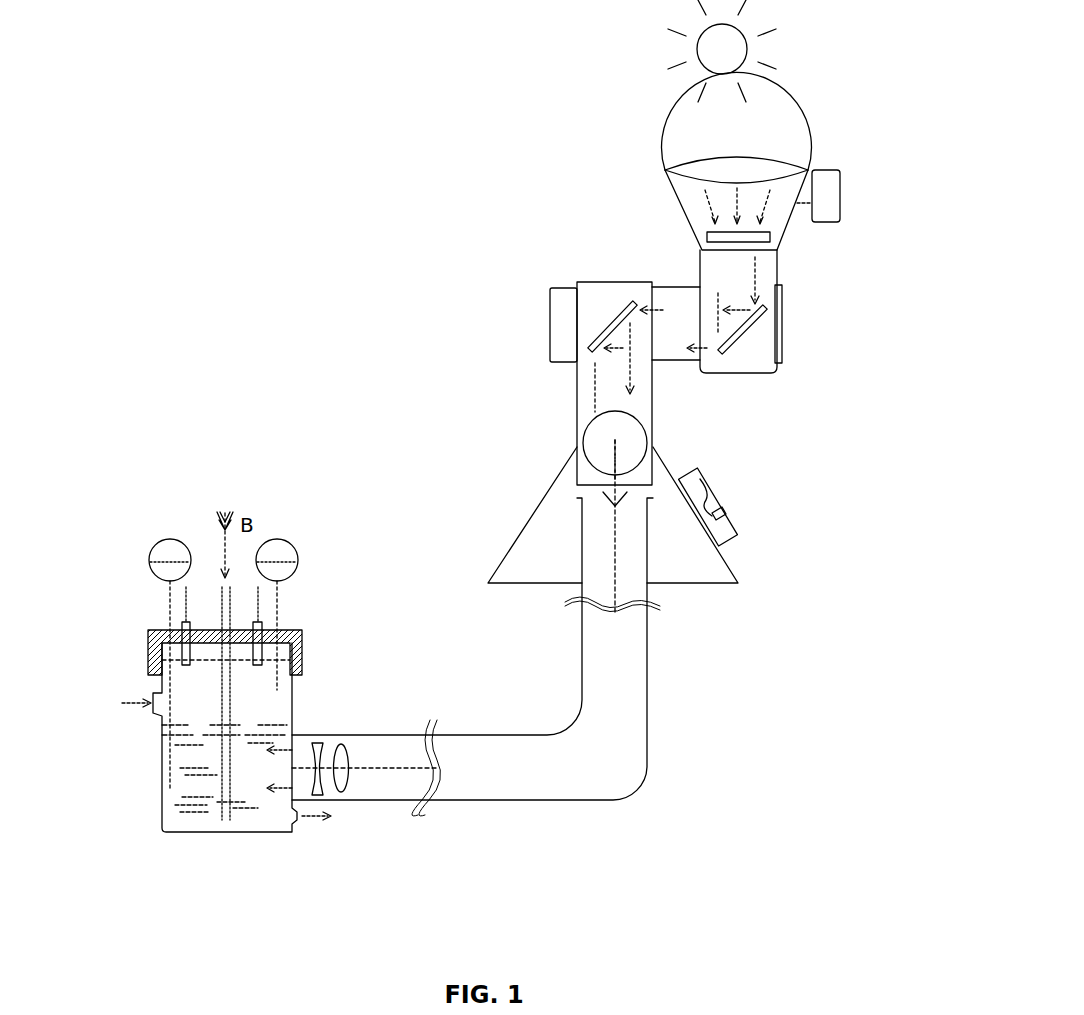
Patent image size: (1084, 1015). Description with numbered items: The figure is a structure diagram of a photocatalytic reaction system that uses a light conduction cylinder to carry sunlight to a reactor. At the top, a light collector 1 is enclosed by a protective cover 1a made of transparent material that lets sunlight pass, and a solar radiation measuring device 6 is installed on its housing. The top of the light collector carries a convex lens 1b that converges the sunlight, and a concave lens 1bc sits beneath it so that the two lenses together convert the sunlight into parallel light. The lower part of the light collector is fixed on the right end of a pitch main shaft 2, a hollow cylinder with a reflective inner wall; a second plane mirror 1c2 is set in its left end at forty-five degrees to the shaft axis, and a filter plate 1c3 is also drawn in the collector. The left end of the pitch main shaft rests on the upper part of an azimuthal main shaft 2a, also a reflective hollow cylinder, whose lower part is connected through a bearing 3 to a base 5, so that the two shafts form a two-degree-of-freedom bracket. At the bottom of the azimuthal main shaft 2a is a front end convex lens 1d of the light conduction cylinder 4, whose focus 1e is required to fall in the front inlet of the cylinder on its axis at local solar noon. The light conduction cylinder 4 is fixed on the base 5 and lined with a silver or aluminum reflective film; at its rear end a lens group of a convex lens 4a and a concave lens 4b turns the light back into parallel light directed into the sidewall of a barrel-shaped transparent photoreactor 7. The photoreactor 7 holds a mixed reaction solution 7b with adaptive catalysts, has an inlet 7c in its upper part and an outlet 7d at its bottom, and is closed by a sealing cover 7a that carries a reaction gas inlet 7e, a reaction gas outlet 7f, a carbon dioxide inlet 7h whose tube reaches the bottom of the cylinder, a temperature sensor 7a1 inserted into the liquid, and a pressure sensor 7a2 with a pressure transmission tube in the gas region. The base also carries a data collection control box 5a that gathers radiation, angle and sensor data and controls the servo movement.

The light collector 1 is at (676, 203).
The protective cover 1a is at (752, 117).
The convex lens 1b is at (770, 165).
The second plane mirror 1c2 is at (576, 281).
The optical filter plate 1c3 is at (771, 237).
The concave lens 1bc is at (779, 364).
The front end convex lens 1d is at (633, 488).
The focus 1e is at (619, 505).
The pitch main shaft 2 is at (550, 302).
The azimuthal main shaft 2a is at (577, 380).
The bearing 3 is at (590, 422).
The light conduction cylinder 4 is at (581, 500).
The convex lens 4a is at (341, 746).
The concave lens 4b is at (318, 742).
The base 5 is at (519, 531).
The data collection control box 5a is at (708, 477).
The solar radiation measuring device 6 is at (841, 199).
The photoreactor 7 is at (292, 698).
The sealing cover 7a is at (302, 640).
The temperature sensor 7a1 is at (170, 664).
The pressure sensor 7a2 is at (277, 614).
The mixed reaction solution 7b is at (288, 732).
The inlet 7c is at (153, 697).
The outlet 7d is at (300, 817).
The reaction gas inlet 7e is at (263, 625).
The reaction gas outlet 7f is at (191, 627).
The carbon dioxide inlet 7h is at (230, 617).